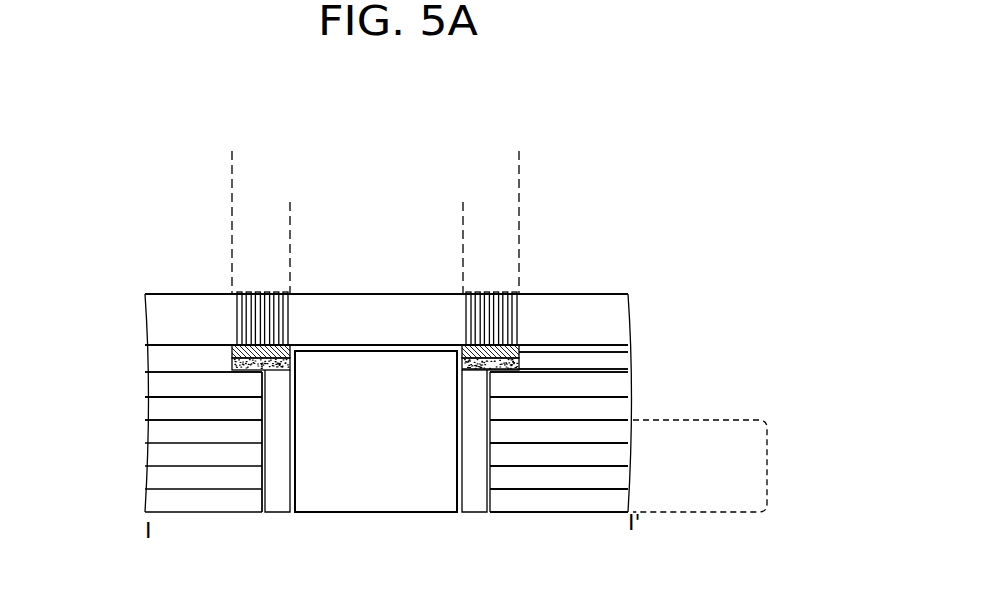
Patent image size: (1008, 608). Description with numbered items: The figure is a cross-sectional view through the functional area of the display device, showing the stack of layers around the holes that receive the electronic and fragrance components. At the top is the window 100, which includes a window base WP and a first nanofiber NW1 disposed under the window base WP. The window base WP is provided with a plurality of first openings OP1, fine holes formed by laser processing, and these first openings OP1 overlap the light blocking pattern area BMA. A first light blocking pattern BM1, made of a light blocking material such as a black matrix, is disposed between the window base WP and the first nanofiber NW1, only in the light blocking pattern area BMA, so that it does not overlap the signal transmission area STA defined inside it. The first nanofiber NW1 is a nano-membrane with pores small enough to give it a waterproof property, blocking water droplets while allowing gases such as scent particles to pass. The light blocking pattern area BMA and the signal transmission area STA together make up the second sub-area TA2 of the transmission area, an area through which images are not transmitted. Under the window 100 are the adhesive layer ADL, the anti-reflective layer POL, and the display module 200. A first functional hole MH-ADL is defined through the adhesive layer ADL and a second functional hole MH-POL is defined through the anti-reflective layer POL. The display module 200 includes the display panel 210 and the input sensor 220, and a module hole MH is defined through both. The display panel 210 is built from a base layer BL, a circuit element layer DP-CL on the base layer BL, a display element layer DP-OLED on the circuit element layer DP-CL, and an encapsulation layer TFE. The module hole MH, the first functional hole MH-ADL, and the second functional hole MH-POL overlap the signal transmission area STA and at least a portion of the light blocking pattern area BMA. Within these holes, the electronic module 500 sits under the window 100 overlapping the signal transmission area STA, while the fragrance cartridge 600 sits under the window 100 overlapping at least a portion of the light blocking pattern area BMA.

The second sub-area TA2 is at (519, 163).
The light blocking pattern area BMA is at (519, 214).
The signal transmission area STA is at (463, 214).
The first openings OP1 is at (513, 293).
The window base WP is at (612, 311).
The first light blocking pattern BM1 is at (521, 350).
The first nanofiber NW1 is at (521, 367).
The window 100 is at (706, 299).
The adhesive layer ADL is at (615, 366).
The anti-reflective layer POL is at (615, 385).
The input sensor 220 is at (618, 407).
The display module 200 is at (827, 398).
The encapsulation layer TFE is at (622, 430).
The display element layer DP-OLED is at (618, 452).
The display panel 210 is at (767, 422).
The circuit element layer DP-CL is at (618, 477).
The base layer BL is at (618, 502).
The first functional hole MH-ADL is at (262, 373).
The second functional hole MH-POL is at (262, 397).
The module hole MH is at (264, 513).
The fragrance cartridge 600 is at (275, 505).
The electronic module 500 is at (400, 500).